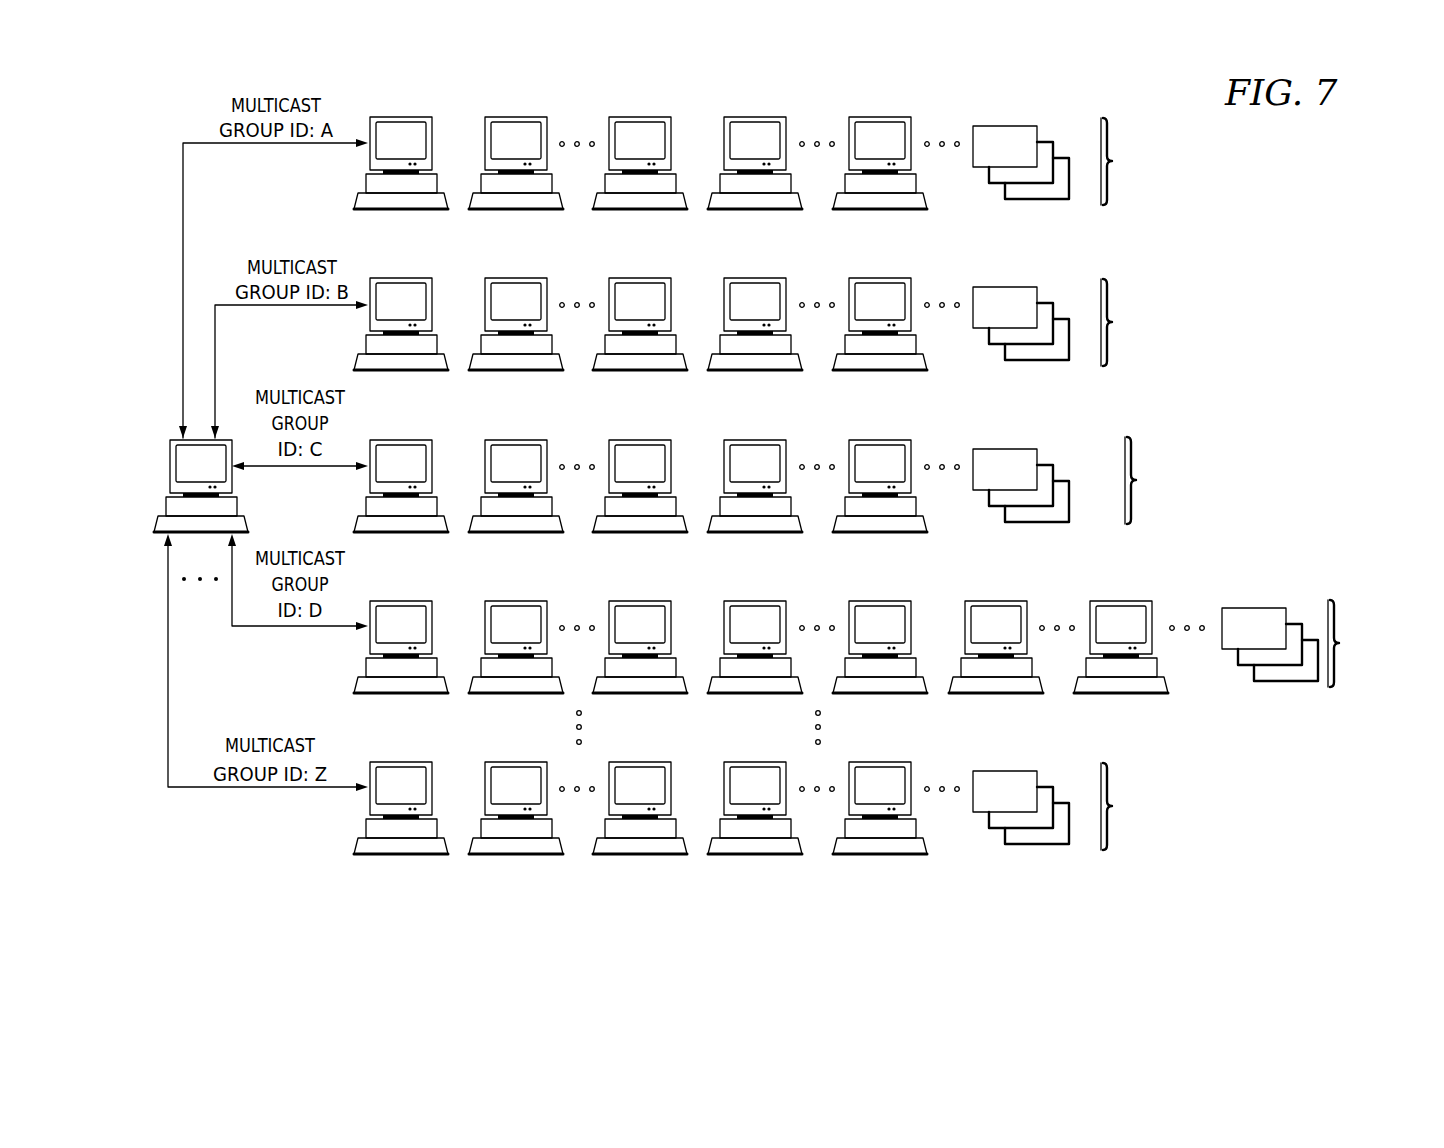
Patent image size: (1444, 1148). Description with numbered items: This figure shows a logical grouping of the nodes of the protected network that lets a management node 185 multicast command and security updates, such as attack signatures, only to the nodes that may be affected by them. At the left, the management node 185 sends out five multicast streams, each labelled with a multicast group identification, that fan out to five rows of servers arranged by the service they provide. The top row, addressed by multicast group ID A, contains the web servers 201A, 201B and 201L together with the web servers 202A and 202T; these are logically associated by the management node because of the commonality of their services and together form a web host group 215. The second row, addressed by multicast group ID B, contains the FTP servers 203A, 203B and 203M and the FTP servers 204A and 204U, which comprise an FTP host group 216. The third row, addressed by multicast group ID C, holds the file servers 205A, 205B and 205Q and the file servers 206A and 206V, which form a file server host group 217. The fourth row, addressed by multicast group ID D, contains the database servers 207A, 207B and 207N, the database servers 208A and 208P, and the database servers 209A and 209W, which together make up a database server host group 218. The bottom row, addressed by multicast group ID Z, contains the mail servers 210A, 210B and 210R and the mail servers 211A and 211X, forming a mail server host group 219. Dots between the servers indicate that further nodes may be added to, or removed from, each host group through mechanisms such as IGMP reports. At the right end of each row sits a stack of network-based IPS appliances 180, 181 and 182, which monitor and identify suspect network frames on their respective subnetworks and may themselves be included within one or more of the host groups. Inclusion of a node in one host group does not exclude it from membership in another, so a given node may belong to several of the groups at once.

The multicast source server 185 is at (170, 467).
The network-based IPS appliance 180 is at (1005, 126).
The network-based IPS appliance 181 is at (991, 183).
The network-based IPS appliance 182 is at (1061, 158).
The web server 201A is at (400, 117).
The web server 201B is at (515, 117).
The web server 201L is at (639, 117).
The web server 202A is at (754, 117).
The web server 202T is at (879, 117).
The FTP server 203A is at (400, 278).
The FTP server 203B is at (515, 278).
The FTP server 203M is at (639, 278).
The FTP server 204A is at (754, 278).
The FTP server 204U is at (879, 278).
The file server 205A is at (400, 440).
The file server 205B is at (515, 440).
The file server 205Q is at (639, 440).
The file server 206A is at (754, 440).
The file server 206V is at (879, 440).
The database server 207A is at (400, 601).
The database server 207B is at (515, 601).
The database server 207N is at (639, 601).
The database server 208A is at (754, 601).
The database server 208P is at (879, 601).
The database server 209A is at (995, 601).
The database server 209W is at (1120, 601).
The mail server 210A is at (400, 762).
The mail server 210B is at (515, 762).
The mail server 210R is at (639, 762).
The mail server 211A is at (754, 762).
The mail server 211X is at (879, 762).
The host group 215 is at (1156, 170).
The FTP host group 216 is at (1155, 331).
The file server host group 217 is at (1181, 489).
The database server host group 218 is at (1379, 665).
The mail server host group 219 is at (1159, 815).